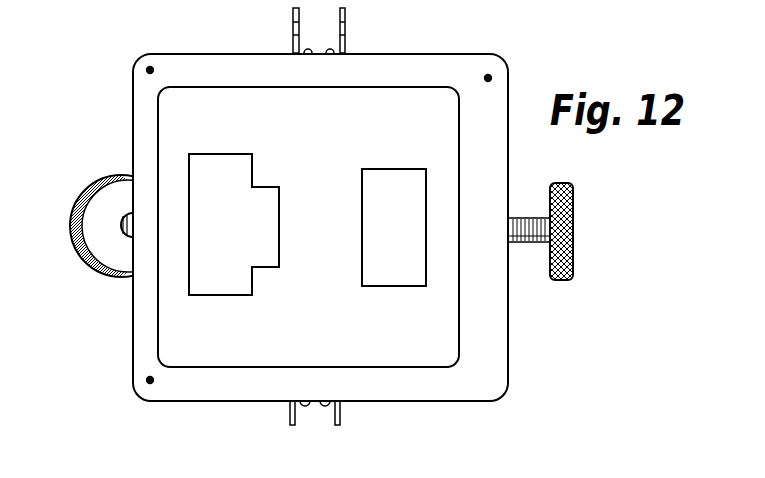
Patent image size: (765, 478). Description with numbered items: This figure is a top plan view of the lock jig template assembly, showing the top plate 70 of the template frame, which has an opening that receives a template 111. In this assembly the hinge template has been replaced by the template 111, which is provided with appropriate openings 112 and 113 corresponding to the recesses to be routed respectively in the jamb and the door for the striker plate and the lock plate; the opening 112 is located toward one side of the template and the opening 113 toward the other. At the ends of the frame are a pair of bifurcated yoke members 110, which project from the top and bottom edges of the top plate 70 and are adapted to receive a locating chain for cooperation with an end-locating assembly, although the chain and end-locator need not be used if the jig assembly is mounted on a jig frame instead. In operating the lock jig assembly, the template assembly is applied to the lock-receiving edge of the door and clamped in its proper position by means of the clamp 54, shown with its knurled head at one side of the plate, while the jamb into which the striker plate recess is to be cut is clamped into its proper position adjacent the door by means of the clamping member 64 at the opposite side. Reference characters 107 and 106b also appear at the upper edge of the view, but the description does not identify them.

The top plate 70 is at (428, 64).
The template 111 is at (171, 324).
The opening 112 is at (261, 258).
The opening 113 is at (410, 279).
The bifurcated yoke member 110 is at (345, 41).
The clamping member 64 is at (85, 236).
The clamp 54 is at (572, 229).
The bracket 107 is at (184, 11).
The bracket arm 106b is at (257, 6).